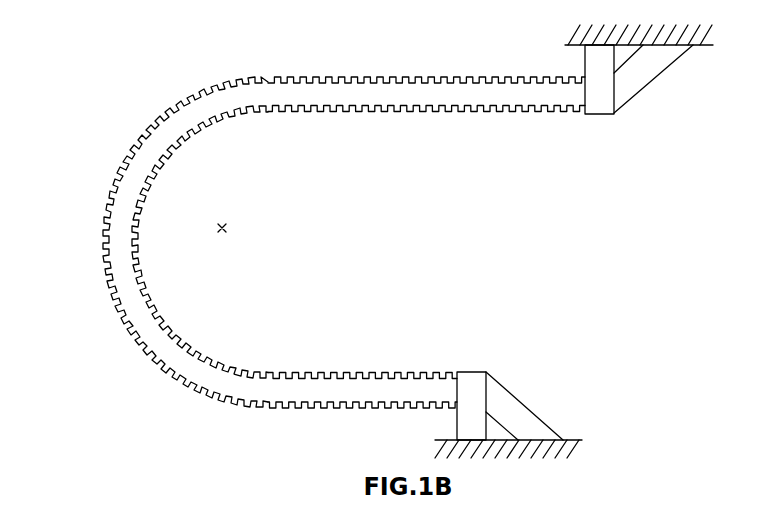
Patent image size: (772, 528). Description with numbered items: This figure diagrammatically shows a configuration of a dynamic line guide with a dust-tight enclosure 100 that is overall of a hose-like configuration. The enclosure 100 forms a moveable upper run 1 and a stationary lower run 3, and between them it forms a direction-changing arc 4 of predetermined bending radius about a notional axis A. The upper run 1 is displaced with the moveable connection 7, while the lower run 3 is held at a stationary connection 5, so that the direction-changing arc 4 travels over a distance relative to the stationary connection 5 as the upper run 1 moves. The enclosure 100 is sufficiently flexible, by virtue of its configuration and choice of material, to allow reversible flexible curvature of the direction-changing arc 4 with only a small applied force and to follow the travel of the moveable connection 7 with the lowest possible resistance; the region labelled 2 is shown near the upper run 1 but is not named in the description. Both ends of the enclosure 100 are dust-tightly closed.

The upper run 1 is at (482, 143).
The upper run of belt 2 is at (155, 71).
The lower run 3 is at (385, 350).
The direction-changing arc 4 is at (180, 220).
The stationary connection 5 is at (473, 393).
The moveable connection 7 is at (602, 88).
The dust-tight enclosure 100 is at (128, 247).
The notional axis A is at (226, 230).